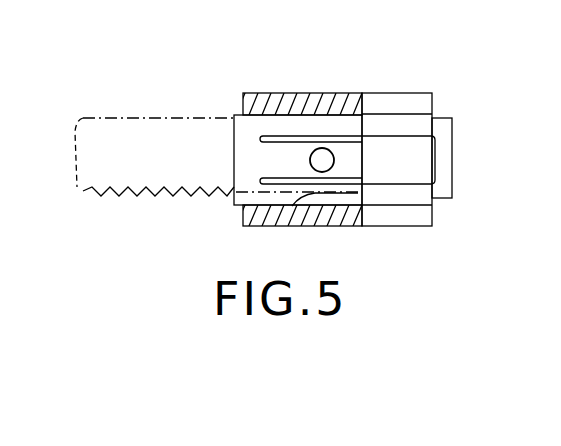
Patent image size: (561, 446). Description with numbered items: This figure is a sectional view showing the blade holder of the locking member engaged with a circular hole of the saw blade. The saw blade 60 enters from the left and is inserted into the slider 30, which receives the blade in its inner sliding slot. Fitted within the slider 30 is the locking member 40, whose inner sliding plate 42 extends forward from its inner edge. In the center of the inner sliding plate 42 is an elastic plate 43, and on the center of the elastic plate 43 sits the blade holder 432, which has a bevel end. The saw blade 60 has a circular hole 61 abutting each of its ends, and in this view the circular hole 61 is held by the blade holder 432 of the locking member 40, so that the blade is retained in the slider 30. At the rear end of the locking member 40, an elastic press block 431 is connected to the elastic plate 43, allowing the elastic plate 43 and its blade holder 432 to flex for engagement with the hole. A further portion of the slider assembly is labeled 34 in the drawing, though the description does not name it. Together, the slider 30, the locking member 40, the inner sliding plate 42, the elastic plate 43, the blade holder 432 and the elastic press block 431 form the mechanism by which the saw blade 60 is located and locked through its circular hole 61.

The saw blade 60 is at (121, 117).
The elastic plate 43 is at (277, 158).
The slider 30 is at (343, 110).
The inner sliding plate 42 is at (278, 128).
The circular hole 61 is at (318, 149).
The blade holder 432 is at (325, 162).
The locking member 40 is at (427, 220).
The elastic press block 431 is at (405, 173).
The latch 34 is at (442, 154).